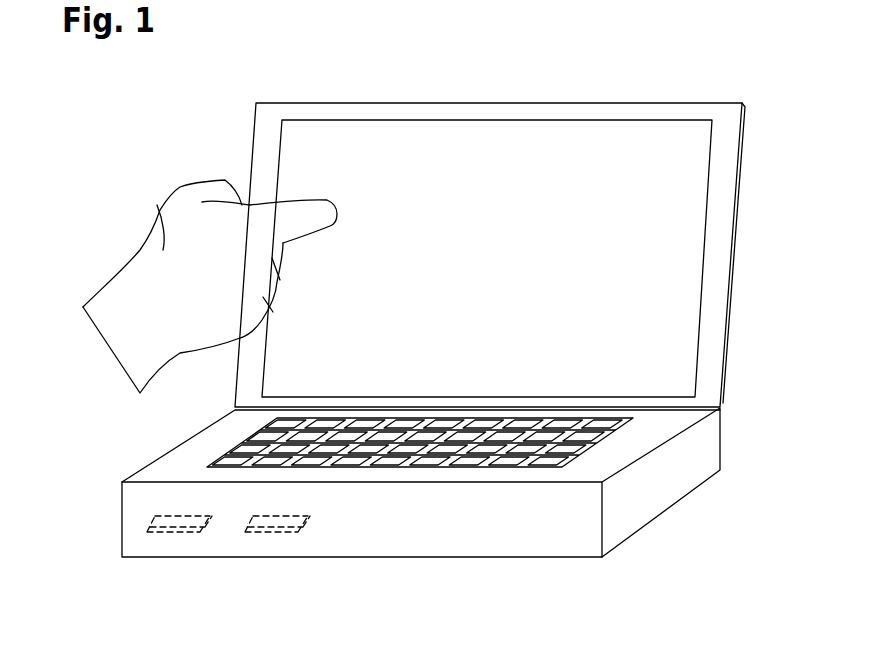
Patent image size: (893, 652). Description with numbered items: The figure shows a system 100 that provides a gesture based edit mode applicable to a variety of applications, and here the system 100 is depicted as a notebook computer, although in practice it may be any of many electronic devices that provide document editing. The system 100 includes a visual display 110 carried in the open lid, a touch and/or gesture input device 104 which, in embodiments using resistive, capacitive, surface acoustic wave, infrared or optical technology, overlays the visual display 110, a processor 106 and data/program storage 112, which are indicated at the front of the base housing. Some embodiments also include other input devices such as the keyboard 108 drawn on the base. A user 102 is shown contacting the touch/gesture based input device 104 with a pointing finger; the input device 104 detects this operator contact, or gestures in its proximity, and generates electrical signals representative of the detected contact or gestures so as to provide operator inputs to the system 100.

The system 100 is at (532, 535).
The user 102 is at (162, 215).
The touch and/or gesture input device 104 is at (470, 140).
The processor 106 is at (173, 533).
The keyboard 108 is at (592, 442).
The visual display 110 is at (688, 133).
The data/program storage 112 is at (270, 535).